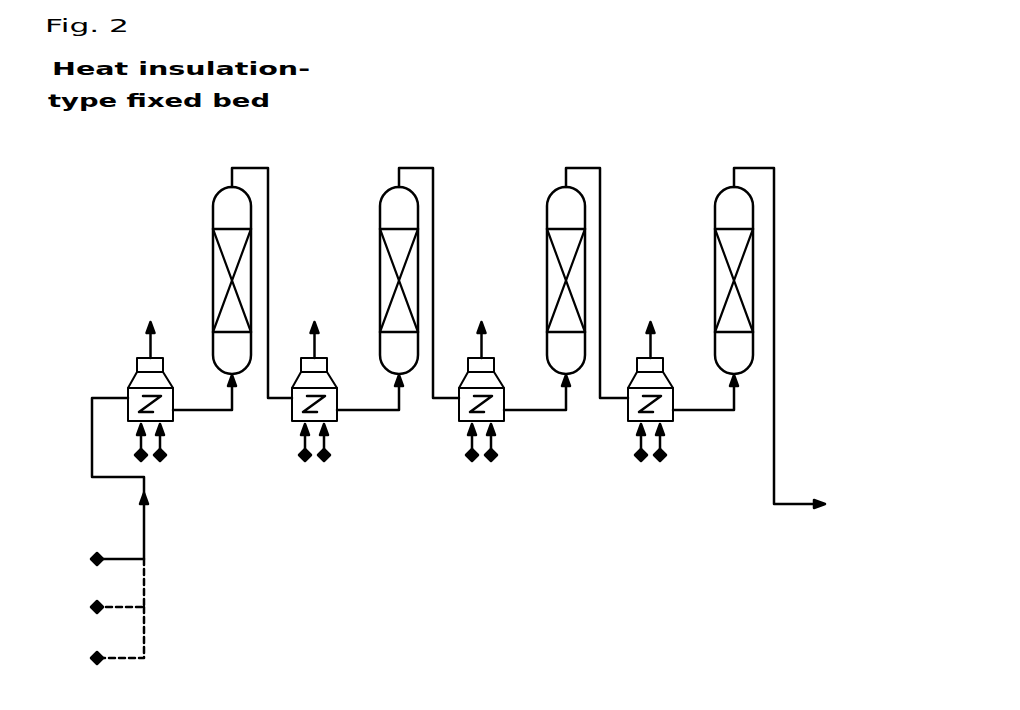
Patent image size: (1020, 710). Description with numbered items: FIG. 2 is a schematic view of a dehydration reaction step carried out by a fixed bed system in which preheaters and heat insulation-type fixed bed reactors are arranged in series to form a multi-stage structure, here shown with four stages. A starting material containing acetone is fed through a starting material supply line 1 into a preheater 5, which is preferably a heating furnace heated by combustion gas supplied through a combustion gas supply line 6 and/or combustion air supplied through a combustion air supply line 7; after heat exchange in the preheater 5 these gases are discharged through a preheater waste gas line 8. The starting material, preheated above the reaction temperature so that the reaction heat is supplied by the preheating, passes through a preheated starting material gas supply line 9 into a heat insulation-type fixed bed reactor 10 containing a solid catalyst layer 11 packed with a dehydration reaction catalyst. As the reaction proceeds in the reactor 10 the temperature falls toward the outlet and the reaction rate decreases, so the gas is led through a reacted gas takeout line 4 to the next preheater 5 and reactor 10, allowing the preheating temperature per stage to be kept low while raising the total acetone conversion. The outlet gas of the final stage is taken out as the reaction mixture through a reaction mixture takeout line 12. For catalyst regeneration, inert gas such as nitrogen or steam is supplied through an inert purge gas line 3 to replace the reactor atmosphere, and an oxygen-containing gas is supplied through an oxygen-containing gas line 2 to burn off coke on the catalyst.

The starting material supply line 1 is at (108, 481).
The oxygen-containing gas line 2 is at (105, 586).
The inert purge gas line 3 is at (105, 635).
The reacted gas takeout line 4 is at (262, 260).
The preheater 5 is at (410, 374).
The combustion gas supply line 6 is at (375, 447).
The combustion air supply line 7 is at (430, 447).
The preheater waste gas line 8 is at (382, 331).
The preheated starting material gas supply line 9 is at (455, 414).
The heat insulation-type fixed bed reactor 10 is at (447, 265).
The solid catalyst layer 11 is at (448, 275).
The reaction mixture takeout line 12 is at (790, 368).